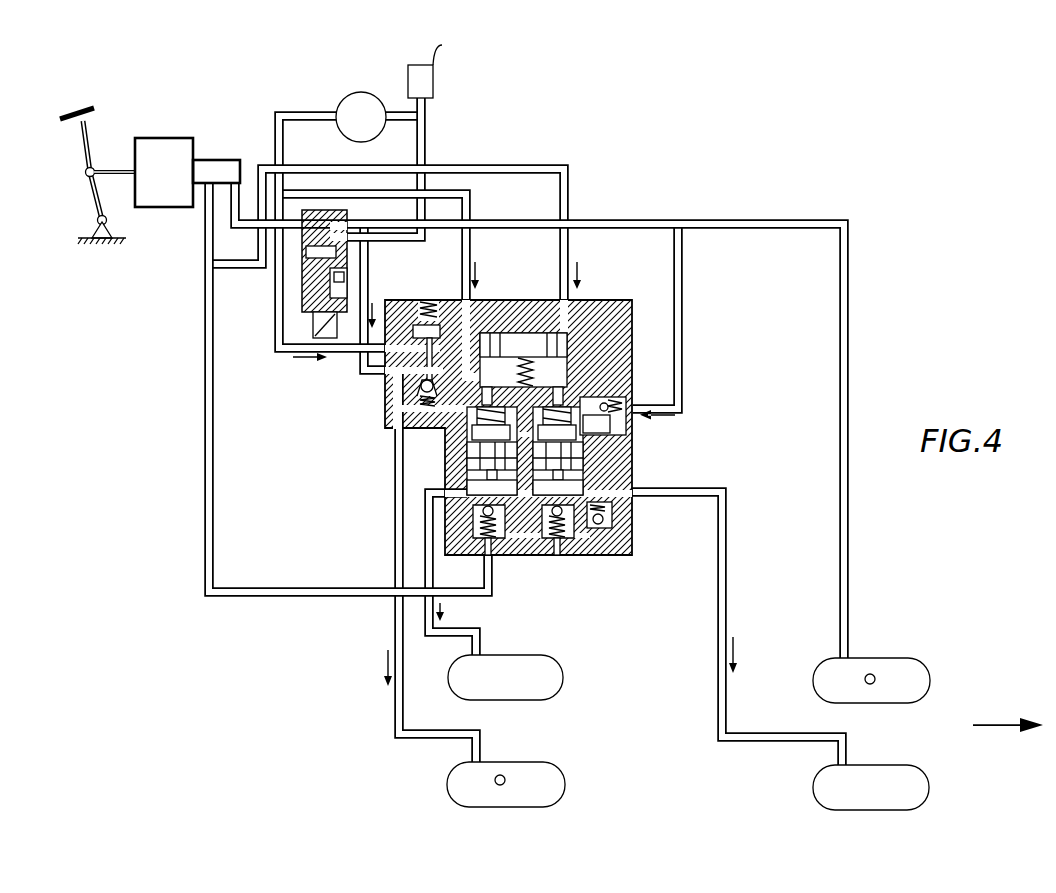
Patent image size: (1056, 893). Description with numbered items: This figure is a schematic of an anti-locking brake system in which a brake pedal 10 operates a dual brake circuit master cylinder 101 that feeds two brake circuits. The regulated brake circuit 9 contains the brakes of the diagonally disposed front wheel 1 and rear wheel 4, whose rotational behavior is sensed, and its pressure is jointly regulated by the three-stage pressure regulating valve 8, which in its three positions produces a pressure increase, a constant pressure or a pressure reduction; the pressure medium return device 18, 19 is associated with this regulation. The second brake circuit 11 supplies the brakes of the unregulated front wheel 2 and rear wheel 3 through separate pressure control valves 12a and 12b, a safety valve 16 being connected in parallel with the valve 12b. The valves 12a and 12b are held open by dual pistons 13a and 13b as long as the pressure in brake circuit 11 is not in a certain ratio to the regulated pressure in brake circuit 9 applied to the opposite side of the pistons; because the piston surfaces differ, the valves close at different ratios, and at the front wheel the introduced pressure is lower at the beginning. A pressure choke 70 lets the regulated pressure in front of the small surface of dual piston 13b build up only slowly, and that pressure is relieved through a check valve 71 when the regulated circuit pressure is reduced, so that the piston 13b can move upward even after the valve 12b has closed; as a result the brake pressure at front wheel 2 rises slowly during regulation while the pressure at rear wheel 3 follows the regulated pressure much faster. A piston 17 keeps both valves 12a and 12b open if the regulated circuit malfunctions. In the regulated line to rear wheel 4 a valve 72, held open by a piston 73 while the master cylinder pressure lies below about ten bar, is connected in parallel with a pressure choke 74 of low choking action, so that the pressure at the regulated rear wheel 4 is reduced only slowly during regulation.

The front wheel 1 is at (905, 676).
The front wheel 2 is at (900, 781).
The rear wheel 3 is at (543, 671).
The rear wheel 4 is at (533, 774).
The pressure regulating valve 8 is at (303, 270).
The brake circuit 9 is at (238, 200).
The brake pedal 10 is at (88, 137).
The master cylinder 101 is at (174, 140).
The brake circuit 11 is at (206, 225).
The pressure control valve 12a is at (500, 556).
The pressure control valve 12b is at (567, 555).
The dual piston 13a is at (475, 472).
The dual piston 13b is at (582, 468).
The safety valve 16 is at (608, 521).
The piston 17 is at (523, 333).
The pressure medium return device 18 is at (433, 88).
The pressure medium return device 19 is at (372, 128).
The pressure choke 70 is at (633, 432).
The check valve 71 is at (622, 384).
The valve 72 is at (402, 398).
The piston 73 is at (425, 301).
The pressure choke 74 is at (384, 385).